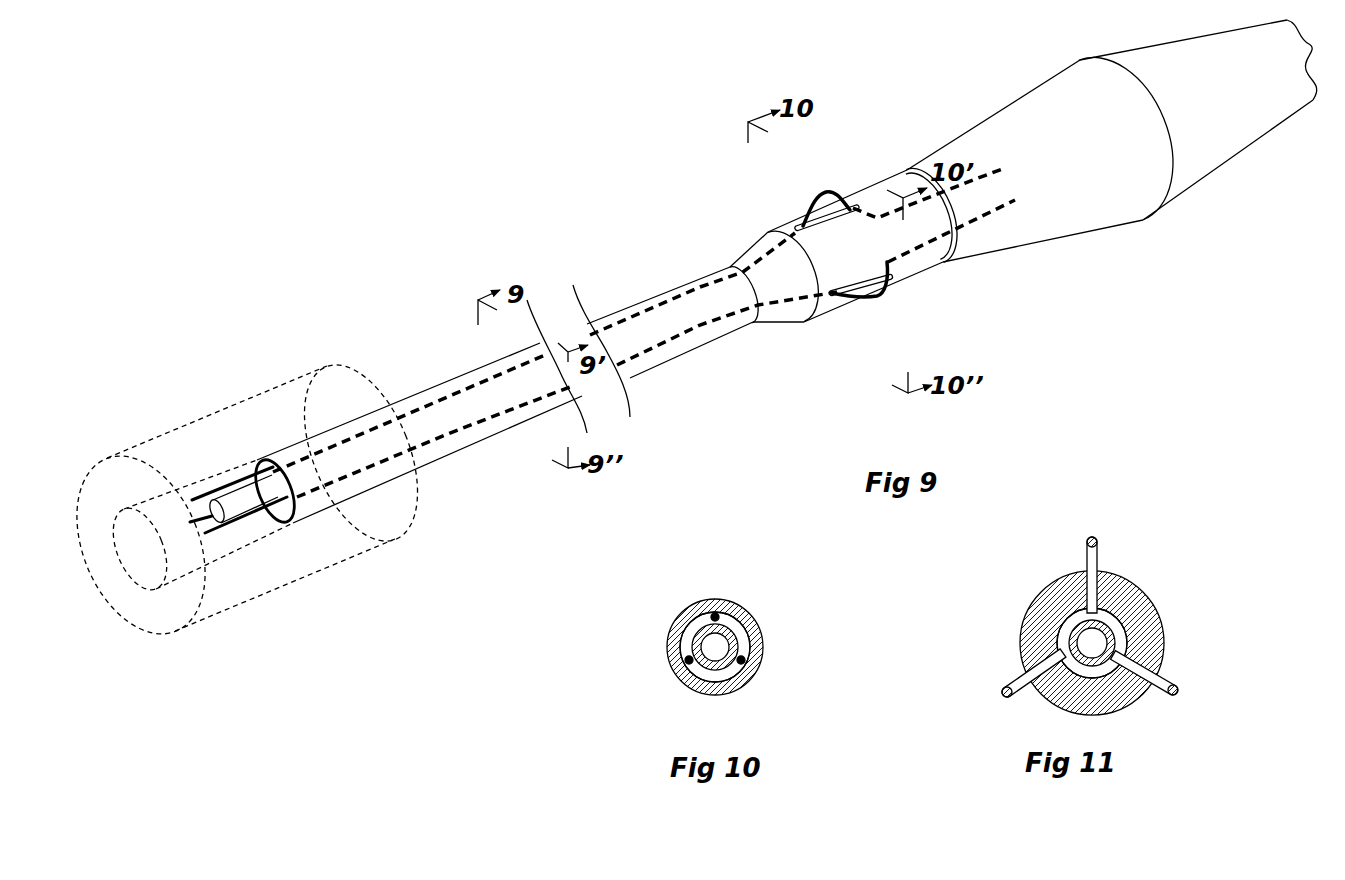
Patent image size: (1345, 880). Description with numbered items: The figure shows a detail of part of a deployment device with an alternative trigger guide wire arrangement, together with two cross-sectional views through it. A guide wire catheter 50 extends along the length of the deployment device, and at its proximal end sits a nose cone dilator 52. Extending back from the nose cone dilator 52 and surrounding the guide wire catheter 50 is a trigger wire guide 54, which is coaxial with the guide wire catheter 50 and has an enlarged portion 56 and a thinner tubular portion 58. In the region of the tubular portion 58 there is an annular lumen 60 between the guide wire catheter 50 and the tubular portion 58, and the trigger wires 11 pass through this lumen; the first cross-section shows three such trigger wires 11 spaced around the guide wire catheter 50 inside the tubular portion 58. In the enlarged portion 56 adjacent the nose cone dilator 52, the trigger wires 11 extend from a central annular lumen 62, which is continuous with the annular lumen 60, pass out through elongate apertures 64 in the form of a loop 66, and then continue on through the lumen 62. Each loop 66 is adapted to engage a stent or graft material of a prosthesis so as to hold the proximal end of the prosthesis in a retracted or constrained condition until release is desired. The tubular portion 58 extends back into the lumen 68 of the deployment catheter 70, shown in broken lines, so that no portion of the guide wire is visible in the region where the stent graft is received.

In FIG. 9, the trigger wire 11 is at (285, 520).
In FIG. 10, the trigger wire 11 is at (697, 600).
In FIG. 9, the guide wire catheter 50 is at (247, 505).
In FIG. 10, the guide wire catheter 50 is at (740, 643).
In FIG. 11, the guide wire catheter 50 is at (1067, 633).
In FIG. 9, the nose cone dilator 52 is at (1083, 213).
In FIG. 9, the trigger wire guide 54 is at (505, 446).
In FIG. 9, the enlarged portion 56 is at (828, 313).
In FIG. 11, the enlarged portion 56 is at (1137, 690).
In FIG. 9, the tubular portion 58 is at (450, 403).
In FIG. 10, the tubular portion 58 is at (750, 607).
In FIG. 10, the annular lumen 60 is at (725, 677).
In FIG. 11, the central annular lumen 62 is at (1122, 627).
In FIG. 9, the elongate aperture 64 is at (840, 193).
In FIG. 11, the elongate aperture 64 is at (1072, 577).
In FIG. 9, the loop 66 is at (827, 187).
In FIG. 11, the loop 66 is at (1098, 542).
In FIG. 9, the lumen 68 is at (110, 572).
In FIG. 9, the deployment catheter 70 is at (213, 440).